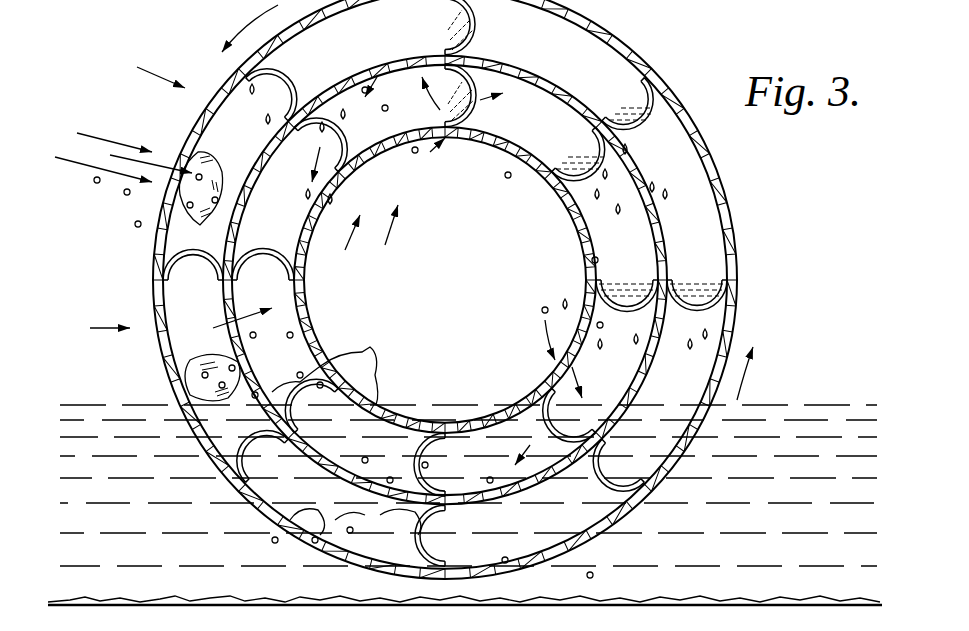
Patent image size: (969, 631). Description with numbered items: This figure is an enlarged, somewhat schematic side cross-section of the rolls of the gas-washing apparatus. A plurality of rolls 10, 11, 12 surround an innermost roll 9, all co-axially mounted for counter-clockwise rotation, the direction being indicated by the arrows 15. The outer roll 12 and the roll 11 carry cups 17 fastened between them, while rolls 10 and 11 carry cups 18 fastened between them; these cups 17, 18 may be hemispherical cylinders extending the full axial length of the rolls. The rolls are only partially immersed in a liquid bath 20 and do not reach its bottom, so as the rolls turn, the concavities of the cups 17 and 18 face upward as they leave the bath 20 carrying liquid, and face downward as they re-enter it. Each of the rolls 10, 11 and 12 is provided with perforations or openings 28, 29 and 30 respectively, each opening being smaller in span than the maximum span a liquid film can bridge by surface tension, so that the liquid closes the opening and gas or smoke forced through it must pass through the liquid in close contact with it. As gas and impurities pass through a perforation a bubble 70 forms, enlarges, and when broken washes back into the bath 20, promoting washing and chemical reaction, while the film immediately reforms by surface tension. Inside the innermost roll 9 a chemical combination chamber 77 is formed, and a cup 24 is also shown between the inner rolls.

The roll 9 is at (578, 229).
The roll 10 is at (520, 156).
The roll 11 is at (530, 100).
The roll 12 is at (604, 31).
The arrows 15 is at (258, 18).
The cups 17 is at (651, 97).
The cups 18 is at (605, 153).
The liquid bath 20 is at (801, 480).
The inner bucket 24 is at (483, 100).
The perforations 28 is at (487, 135).
The perforations 29 is at (491, 65).
The perforations 30 is at (736, 226).
The bubble 70 is at (210, 156).
The chemical combination chamber 77 is at (437, 252).